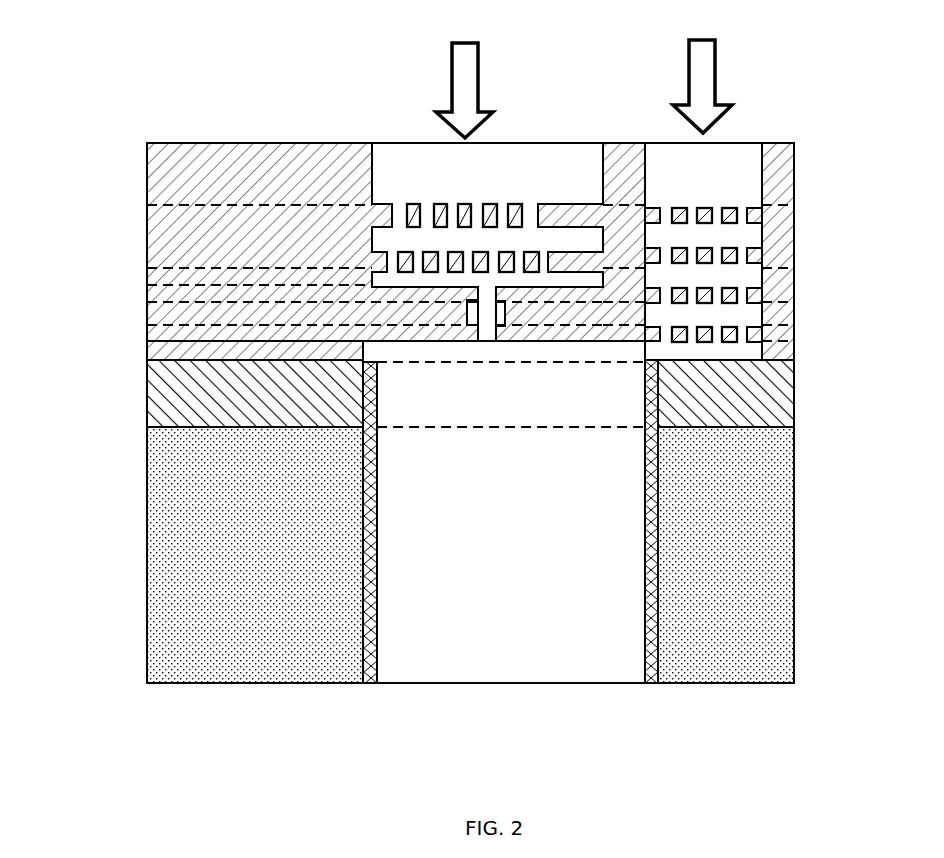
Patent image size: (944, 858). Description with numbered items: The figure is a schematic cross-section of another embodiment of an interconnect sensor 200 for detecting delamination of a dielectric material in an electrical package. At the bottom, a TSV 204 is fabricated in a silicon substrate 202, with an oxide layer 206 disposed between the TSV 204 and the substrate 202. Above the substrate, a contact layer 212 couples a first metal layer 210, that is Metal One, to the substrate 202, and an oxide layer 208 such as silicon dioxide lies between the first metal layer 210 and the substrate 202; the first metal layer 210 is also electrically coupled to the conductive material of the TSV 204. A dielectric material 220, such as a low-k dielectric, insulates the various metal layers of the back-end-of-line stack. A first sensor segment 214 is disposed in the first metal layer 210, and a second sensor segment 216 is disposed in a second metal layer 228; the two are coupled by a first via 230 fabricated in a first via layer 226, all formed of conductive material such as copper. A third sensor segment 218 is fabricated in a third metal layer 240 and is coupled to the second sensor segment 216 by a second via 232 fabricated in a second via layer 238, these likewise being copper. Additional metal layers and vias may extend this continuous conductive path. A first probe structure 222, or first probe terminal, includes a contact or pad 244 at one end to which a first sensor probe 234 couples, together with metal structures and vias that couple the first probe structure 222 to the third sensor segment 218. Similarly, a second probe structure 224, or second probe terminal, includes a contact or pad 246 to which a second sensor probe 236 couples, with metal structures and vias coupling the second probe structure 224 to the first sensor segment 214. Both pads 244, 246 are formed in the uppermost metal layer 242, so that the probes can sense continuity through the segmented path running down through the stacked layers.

The semiconductor structure 200 is at (429, 345).
The silicon substrate 202 is at (222, 670).
The TSV 204 is at (518, 663).
The oxide layer 206 is at (370, 672).
The oxide layer 208 is at (782, 412).
The first metal layer 210 is at (142, 343).
The contact layer 212 is at (145, 362).
The first sensor segment 214 is at (377, 348).
The second sensor segment 216 is at (493, 315).
The third sensor segment 218 is at (385, 287).
The dielectric material 220 is at (236, 178).
The first probe structure 222 is at (331, 148).
The second probe structure 224 is at (802, 143).
The first via layer 226 is at (142, 340).
The second metal layer 228 is at (142, 303).
The first via 230 is at (487, 335).
The second via 232 is at (488, 294).
The first sensor probe 234 is at (478, 66).
The second sensor probe 236 is at (715, 62).
The second via layer 238 is at (142, 300).
The third metal layer 240 is at (142, 268).
The uppermost metal layer 242 is at (145, 143).
The contact or pad 244 is at (447, 172).
The contact or pad 246 is at (727, 170).